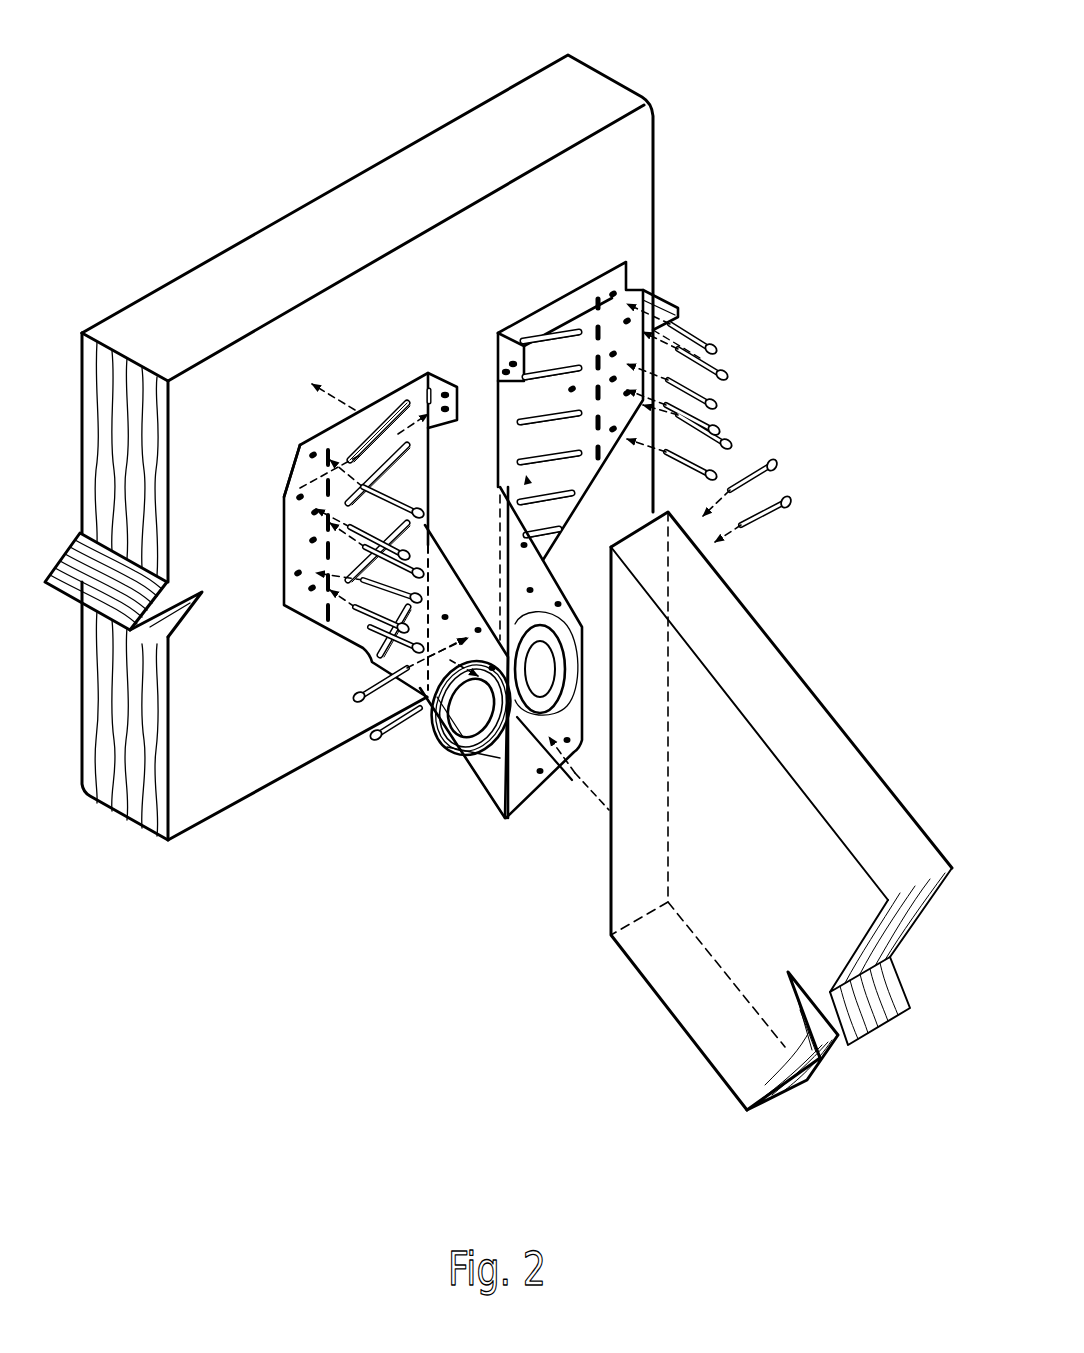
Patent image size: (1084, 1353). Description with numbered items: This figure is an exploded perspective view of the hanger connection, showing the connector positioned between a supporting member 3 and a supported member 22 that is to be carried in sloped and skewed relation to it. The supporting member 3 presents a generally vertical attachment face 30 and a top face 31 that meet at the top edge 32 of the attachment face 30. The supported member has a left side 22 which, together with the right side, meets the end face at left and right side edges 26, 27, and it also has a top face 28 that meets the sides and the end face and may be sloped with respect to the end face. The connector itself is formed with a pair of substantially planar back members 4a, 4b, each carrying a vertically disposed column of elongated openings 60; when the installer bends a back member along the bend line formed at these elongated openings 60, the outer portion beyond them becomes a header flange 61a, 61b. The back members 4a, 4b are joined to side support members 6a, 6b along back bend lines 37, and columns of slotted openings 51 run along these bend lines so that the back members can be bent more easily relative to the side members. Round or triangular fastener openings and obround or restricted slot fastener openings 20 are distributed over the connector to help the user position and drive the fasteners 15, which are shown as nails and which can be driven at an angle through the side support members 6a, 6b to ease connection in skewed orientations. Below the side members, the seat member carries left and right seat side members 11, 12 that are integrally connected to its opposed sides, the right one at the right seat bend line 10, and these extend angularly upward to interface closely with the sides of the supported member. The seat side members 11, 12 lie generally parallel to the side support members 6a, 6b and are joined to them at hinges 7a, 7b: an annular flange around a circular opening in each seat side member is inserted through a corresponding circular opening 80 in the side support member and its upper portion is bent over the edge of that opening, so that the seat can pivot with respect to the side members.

The supporting member 3 is at (349, 166).
The back member 4a is at (362, 394).
The back member 4b is at (543, 290).
The side support member 6a is at (464, 671).
The side support member 6b is at (540, 585).
The hinge 7a is at (463, 738).
The hinge 7b is at (567, 675).
The right seat bend line 10 is at (518, 715).
The left seat side member 11 is at (488, 778).
The right seat side member 12 is at (565, 728).
The fasteners 15 is at (690, 324).
The obround or restricted slot fastener openings 20 is at (300, 502).
The left side 22 is at (813, 836).
The left side edge 26 is at (605, 833).
The right side edge 27 is at (667, 658).
The top face 28 is at (796, 710).
The attachment face 30 is at (620, 147).
The top face 31 is at (580, 90).
The top edge 32 is at (606, 113).
The back bend lines 37 is at (500, 537).
The slotted openings 51 is at (508, 565).
The elongated openings 60 is at (348, 462).
The header flange 61a is at (300, 455).
The header flange 61b is at (606, 258).
The circular openings 80 is at (443, 735).